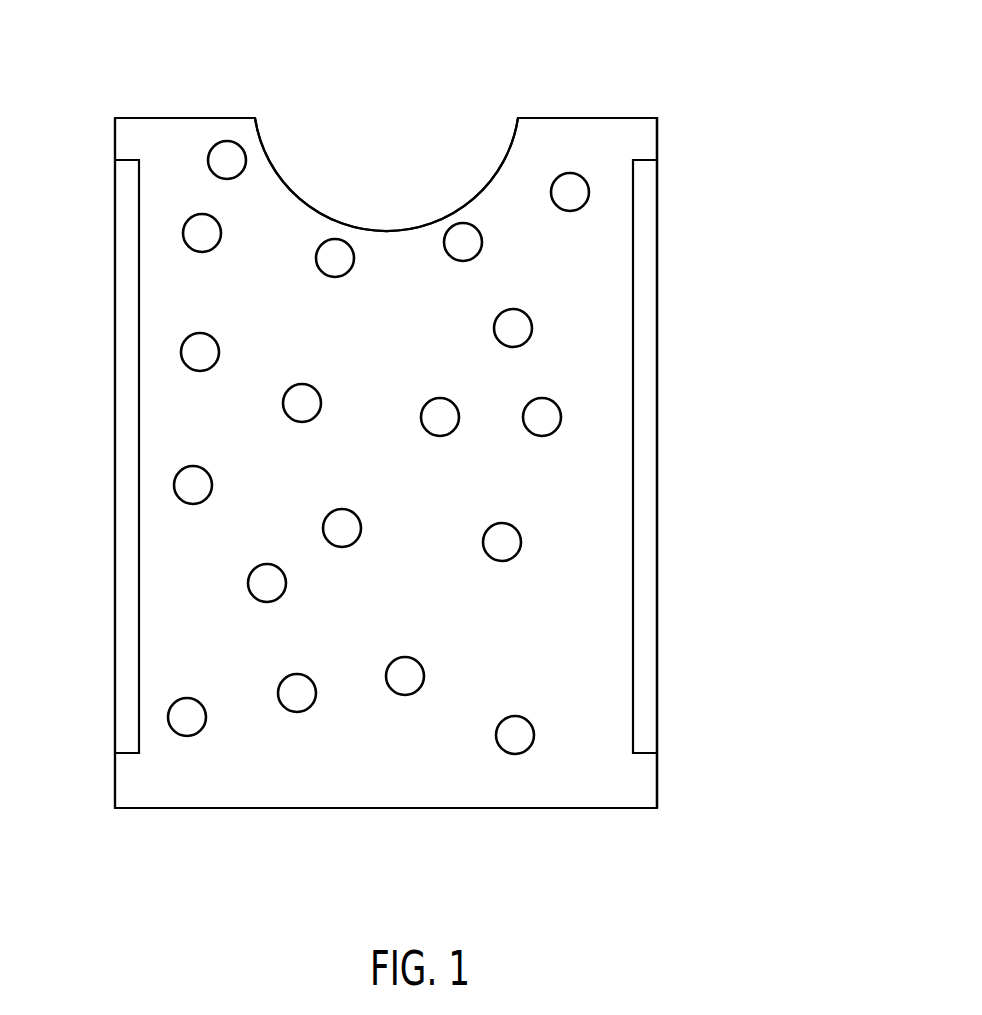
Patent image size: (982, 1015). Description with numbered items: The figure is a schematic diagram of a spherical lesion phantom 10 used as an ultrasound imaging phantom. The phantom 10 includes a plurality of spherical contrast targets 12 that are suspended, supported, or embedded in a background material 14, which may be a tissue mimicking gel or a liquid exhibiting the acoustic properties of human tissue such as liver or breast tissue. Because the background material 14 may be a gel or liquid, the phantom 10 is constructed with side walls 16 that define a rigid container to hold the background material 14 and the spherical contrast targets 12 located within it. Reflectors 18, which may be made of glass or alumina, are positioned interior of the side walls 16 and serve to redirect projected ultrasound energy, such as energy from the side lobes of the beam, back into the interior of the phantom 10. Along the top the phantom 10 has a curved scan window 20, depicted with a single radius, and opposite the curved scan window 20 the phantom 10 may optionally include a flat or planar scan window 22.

The spherical lesion phantom 10 is at (740, 88).
The spherical contrast targets 12 is at (200, 213).
The background material 14 is at (598, 485).
The side walls 16 is at (658, 532).
The reflectors 18 is at (122, 290).
The curved scan window 20 is at (503, 160).
The flat scan window 22 is at (497, 810).